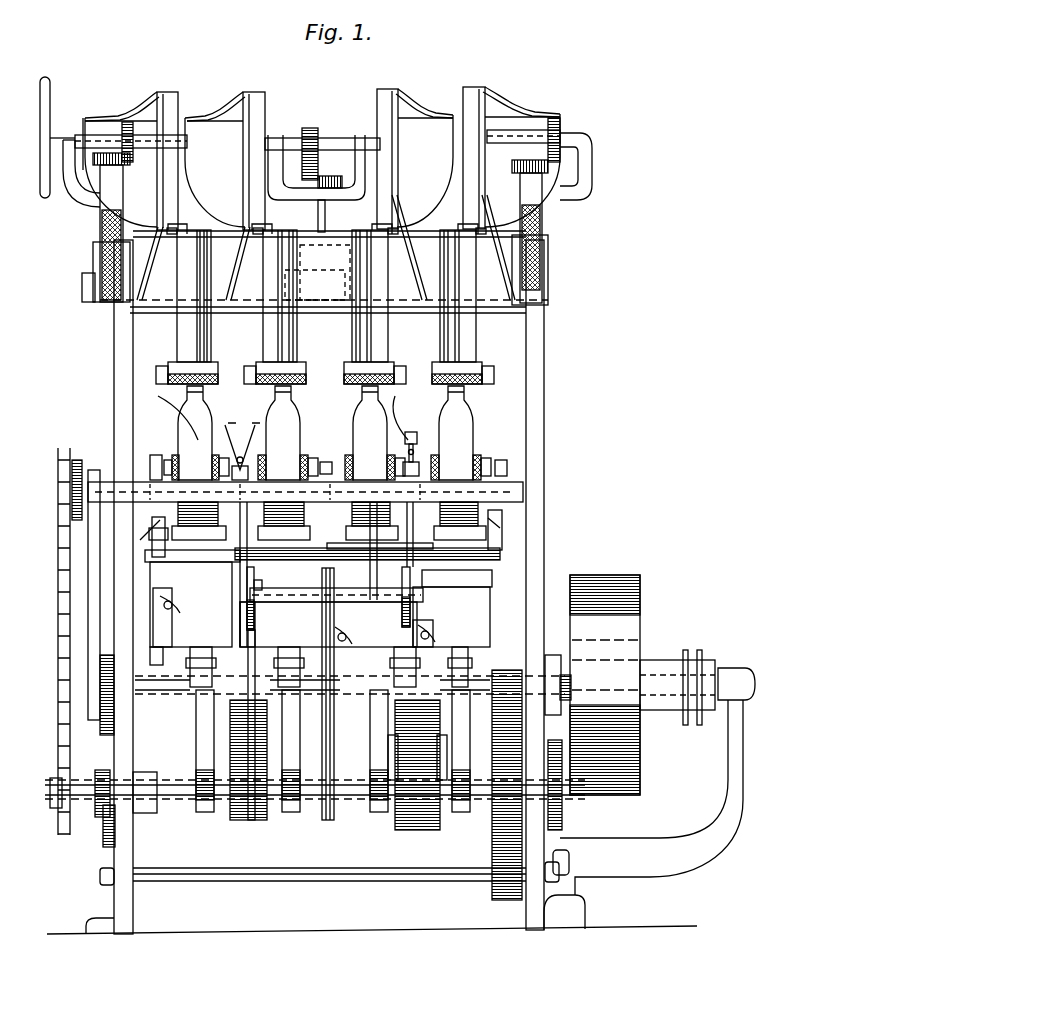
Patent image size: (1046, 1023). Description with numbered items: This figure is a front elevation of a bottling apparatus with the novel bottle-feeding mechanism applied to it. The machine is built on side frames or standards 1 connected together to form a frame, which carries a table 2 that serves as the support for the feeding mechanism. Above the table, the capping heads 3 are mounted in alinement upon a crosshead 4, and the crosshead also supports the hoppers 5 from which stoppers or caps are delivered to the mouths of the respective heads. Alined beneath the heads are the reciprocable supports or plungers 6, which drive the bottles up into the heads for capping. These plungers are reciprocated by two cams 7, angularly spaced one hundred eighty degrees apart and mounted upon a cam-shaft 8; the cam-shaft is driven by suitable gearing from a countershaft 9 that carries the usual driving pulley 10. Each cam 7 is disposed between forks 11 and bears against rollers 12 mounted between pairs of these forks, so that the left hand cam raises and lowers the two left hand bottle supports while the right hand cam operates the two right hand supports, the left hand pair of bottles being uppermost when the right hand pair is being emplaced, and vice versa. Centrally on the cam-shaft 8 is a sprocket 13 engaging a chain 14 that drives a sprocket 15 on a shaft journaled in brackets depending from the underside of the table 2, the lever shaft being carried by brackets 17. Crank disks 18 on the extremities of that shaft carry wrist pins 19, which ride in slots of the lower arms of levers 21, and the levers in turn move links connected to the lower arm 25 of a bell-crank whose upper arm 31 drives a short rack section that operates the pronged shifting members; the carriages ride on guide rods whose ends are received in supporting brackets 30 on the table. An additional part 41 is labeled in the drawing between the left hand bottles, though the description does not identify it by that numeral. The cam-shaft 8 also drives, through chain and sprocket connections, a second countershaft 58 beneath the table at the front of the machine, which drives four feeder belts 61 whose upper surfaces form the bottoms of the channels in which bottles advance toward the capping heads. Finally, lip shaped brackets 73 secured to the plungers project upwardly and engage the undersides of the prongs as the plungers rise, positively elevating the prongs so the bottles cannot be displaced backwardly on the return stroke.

The side frames 1 is at (110, 455).
The table 2 is at (525, 486).
The capping heads 3 is at (182, 352).
The crosshead 4 is at (335, 300).
The hoppers 5 is at (145, 100).
The reciprocable supports 6 is at (150, 540).
The cams 7 is at (250, 770).
The cam-shaft 8 is at (48, 800).
The countershaft 9 is at (178, 694).
The driving pulley 10 is at (630, 635).
The forks 11 is at (202, 790).
The rollers 12 is at (228, 708).
The sprocket 13 is at (326, 820).
The chain 14 is at (325, 722).
The sprocket 15 is at (318, 593).
The brackets 17 is at (213, 542).
The crank disk 18 is at (246, 622).
The wrist pin 19 is at (246, 590).
The lever 21 is at (326, 562).
The lower arm 25 is at (409, 430).
The supporting brackets 30 is at (156, 456).
The upper arm 31 is at (286, 410).
The toggle 41 is at (225, 425).
The second countershaft 58 is at (60, 515).
The feeder belts 61 is at (329, 509).
The lip shaped brackets 73 is at (325, 433).